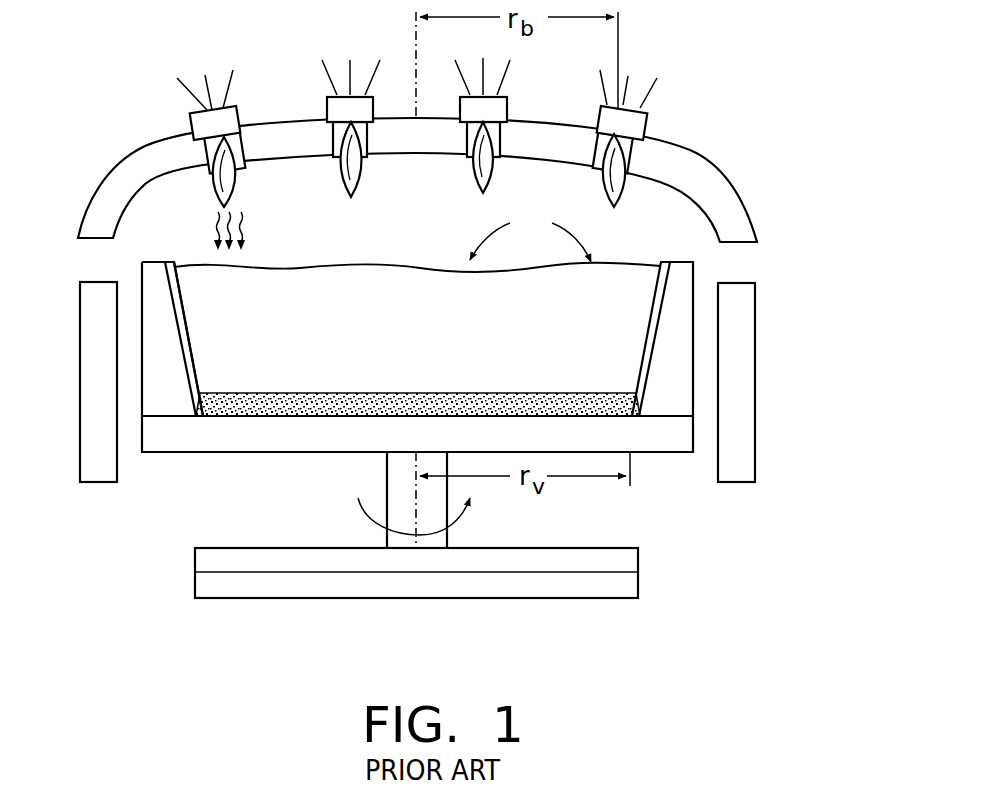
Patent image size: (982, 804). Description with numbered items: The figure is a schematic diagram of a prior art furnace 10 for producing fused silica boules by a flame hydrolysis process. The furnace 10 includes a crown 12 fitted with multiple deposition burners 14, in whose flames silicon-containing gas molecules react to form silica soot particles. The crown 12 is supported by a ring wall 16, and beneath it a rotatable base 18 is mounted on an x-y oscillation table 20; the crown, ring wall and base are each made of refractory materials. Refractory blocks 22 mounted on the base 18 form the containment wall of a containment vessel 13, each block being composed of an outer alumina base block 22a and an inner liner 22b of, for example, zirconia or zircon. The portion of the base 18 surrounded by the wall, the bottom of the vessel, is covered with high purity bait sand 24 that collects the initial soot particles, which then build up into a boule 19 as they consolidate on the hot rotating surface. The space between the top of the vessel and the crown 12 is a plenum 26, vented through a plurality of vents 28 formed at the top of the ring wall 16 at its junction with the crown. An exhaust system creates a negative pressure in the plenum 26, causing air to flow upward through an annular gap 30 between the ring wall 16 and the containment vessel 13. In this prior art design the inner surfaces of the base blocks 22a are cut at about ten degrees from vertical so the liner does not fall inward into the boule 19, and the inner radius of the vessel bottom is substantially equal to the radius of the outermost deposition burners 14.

The furnace 10 is at (150, 541).
The crown 12 is at (737, 220).
The containment vessel 13 is at (530, 233).
The deposition burners 14 is at (196, 120).
The ring wall 16 is at (745, 405).
The rotatable base 18 is at (287, 440).
The boule 19 is at (306, 333).
The x-y oscillation table 20 is at (525, 588).
The refractory blocks 22 is at (178, 407).
The outer alumina base block 22a is at (663, 408).
The inner liner 22b is at (648, 322).
The bait sand 24 is at (370, 392).
The plenum 26 is at (351, 243).
The vents 28 is at (747, 257).
The annular gap 30 is at (707, 450).